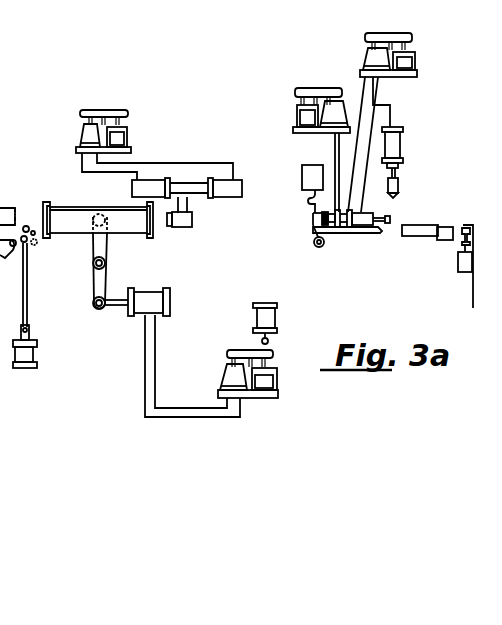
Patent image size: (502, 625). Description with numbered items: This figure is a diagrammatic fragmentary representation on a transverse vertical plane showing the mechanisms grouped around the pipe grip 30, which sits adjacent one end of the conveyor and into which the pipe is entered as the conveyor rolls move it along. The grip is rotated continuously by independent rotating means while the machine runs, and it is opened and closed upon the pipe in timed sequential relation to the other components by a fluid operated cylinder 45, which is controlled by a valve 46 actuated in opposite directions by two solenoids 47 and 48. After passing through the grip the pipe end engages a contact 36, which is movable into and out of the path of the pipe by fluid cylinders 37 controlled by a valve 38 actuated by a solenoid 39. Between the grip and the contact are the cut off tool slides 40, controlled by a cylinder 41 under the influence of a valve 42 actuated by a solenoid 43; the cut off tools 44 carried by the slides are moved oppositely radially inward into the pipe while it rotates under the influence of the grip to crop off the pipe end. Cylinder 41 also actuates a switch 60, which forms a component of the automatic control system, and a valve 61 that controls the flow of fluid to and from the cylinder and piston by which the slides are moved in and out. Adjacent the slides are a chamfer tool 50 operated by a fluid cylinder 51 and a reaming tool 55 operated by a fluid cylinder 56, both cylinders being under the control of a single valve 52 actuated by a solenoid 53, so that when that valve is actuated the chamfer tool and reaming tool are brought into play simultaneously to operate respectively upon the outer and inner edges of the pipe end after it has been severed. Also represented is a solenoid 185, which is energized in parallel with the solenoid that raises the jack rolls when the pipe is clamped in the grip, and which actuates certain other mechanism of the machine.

The pipe grip 30 is at (68, 208).
The contact 36 is at (192, 218).
The fluid cylinders 37 is at (147, 183).
The valve 38 is at (88, 133).
The solenoid 39 is at (117, 133).
The cut off tool slides 40 is at (343, 234).
The cylinder 41 is at (327, 226).
The valve 42 is at (328, 108).
The solenoid 43 is at (302, 115).
The cut off tools 44 is at (383, 228).
The fluid operated cylinder 45 is at (152, 297).
The valve 46 is at (237, 377).
The solenoid 47 is at (267, 382).
The solenoid 48 is at (262, 322).
The chamfer tool 50 is at (399, 183).
The fluid cylinder 51 is at (402, 128).
The valve 52 is at (370, 58).
The solenoid 53 is at (417, 63).
The reaming tool 55 is at (392, 220).
The fluid cylinder 56 is at (357, 223).
The switch 60 is at (290, 172).
The valve 61 is at (290, 248).
The solenoid 185 is at (33, 355).